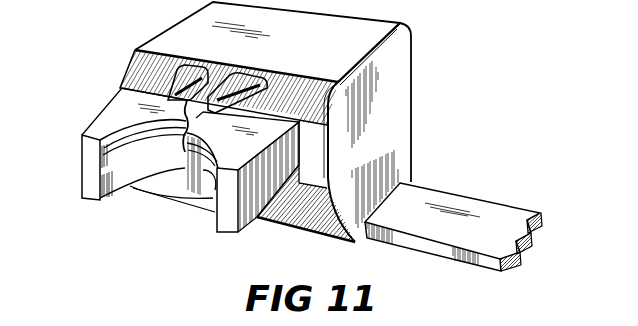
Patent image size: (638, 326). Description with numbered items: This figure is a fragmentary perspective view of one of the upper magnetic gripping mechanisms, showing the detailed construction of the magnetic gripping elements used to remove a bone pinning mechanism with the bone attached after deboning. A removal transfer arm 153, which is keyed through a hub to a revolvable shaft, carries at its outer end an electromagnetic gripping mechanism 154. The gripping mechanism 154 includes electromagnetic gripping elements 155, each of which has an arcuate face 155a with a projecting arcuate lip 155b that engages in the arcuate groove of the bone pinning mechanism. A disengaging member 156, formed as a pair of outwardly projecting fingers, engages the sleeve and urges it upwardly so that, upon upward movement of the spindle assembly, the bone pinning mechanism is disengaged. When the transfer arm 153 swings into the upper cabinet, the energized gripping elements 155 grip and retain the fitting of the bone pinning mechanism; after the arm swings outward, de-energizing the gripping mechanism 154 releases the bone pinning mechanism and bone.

The transfer arm 153 is at (486, 203).
The electromagnetic gripping mechanism 154 is at (411, 34).
The electromagnetic gripping element 155 is at (80, 182).
The arcuate face 155a is at (126, 176).
The arcuate lip 155b is at (127, 138).
The disengaging member 156 is at (257, 45).